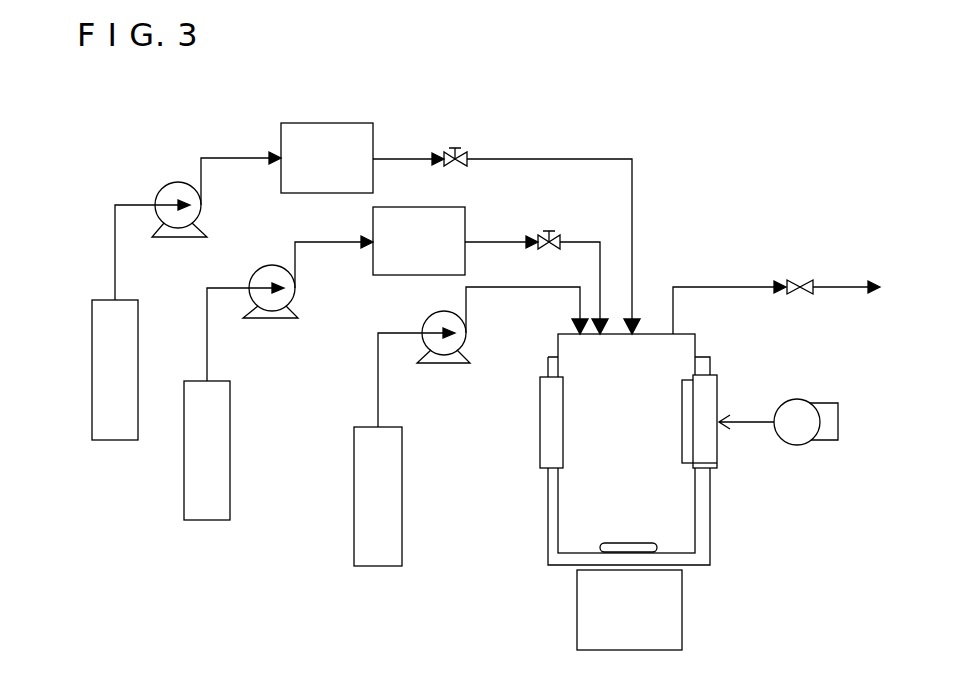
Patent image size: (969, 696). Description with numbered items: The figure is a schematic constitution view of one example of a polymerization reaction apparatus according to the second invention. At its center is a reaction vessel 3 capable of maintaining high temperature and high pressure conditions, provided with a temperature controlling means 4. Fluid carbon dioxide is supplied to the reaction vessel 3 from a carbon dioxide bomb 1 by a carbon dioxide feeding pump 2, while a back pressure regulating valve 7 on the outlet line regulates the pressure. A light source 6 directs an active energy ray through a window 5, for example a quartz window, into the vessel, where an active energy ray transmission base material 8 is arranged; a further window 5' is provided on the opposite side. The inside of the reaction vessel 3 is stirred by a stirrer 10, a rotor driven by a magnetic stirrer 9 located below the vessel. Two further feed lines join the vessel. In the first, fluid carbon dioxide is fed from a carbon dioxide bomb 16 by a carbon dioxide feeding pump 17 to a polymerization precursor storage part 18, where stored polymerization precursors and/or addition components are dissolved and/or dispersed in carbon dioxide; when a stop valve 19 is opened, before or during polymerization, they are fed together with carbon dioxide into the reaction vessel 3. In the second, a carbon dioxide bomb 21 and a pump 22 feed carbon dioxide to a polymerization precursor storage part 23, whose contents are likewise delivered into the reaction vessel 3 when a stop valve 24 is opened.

The carbon dioxide bomb 1 is at (395, 530).
The carbon dioxide feeding pump 2 is at (455, 345).
The reaction vessel 3 is at (692, 543).
The temperature controlling means 4 is at (705, 525).
The window for incidence of an active energy ray 5 is at (725, 412).
The window 5' is at (516, 422).
The light source 6 is at (803, 418).
The back pressure regulating valve 7 is at (815, 283).
The active energy ray transmission base material 8 is at (700, 460).
The magnetic stirrer 9 is at (677, 620).
The stirrer 10 is at (600, 548).
The carbon dioxide bomb 16 is at (225, 486).
The carbon dioxide feeding pump 17 is at (292, 303).
The polymerization precursor storage part 18 is at (457, 225).
The stop valve 19 is at (557, 240).
The carbon dioxide bomb 21 is at (97, 398).
The carbon dioxide feeding pump 22 is at (190, 215).
The polymerization precursor storage part 23 is at (363, 143).
The stop valve 24 is at (466, 153).